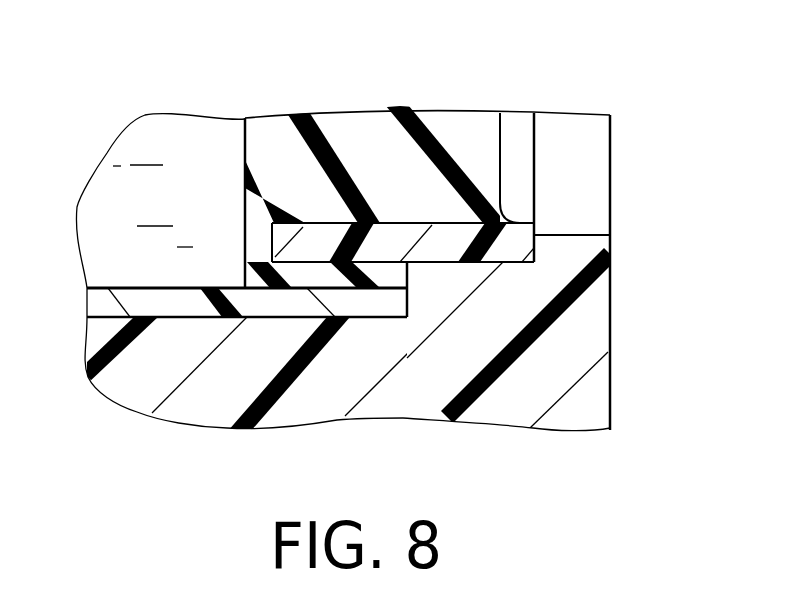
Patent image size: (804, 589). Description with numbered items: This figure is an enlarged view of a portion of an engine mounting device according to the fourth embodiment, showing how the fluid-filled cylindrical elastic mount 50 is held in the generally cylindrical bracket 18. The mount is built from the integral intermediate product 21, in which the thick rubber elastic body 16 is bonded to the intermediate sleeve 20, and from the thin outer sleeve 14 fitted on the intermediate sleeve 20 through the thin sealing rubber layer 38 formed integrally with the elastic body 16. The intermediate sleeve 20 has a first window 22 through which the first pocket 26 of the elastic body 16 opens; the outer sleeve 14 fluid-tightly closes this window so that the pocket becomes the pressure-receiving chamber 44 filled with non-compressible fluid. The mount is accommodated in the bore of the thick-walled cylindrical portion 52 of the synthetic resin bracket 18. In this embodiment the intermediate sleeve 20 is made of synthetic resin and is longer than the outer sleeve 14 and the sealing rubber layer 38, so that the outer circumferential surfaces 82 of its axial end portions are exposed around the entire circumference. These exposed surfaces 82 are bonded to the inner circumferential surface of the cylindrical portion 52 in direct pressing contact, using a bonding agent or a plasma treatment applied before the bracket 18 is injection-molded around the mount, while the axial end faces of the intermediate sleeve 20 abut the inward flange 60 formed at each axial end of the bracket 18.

The outer sleeve 14 is at (272, 307).
The elastic body 16 is at (453, 118).
The generally cylindrical bracket 18 is at (645, 389).
The intermediate sleeve 20 is at (384, 240).
The integral intermediate product 21 is at (528, 172).
The first window 22 is at (272, 241).
The first pocket 26 is at (245, 136).
The sealing rubber layer 38 is at (322, 277).
The pressure-receiving chamber 44 is at (107, 192).
The fluid-filled cylindrical elastic mount 50 is at (373, 347).
The cylindrical portion 52 is at (143, 373).
The inward flange 60 is at (576, 249).
The exposed outer circumferential surface 82 is at (446, 260).